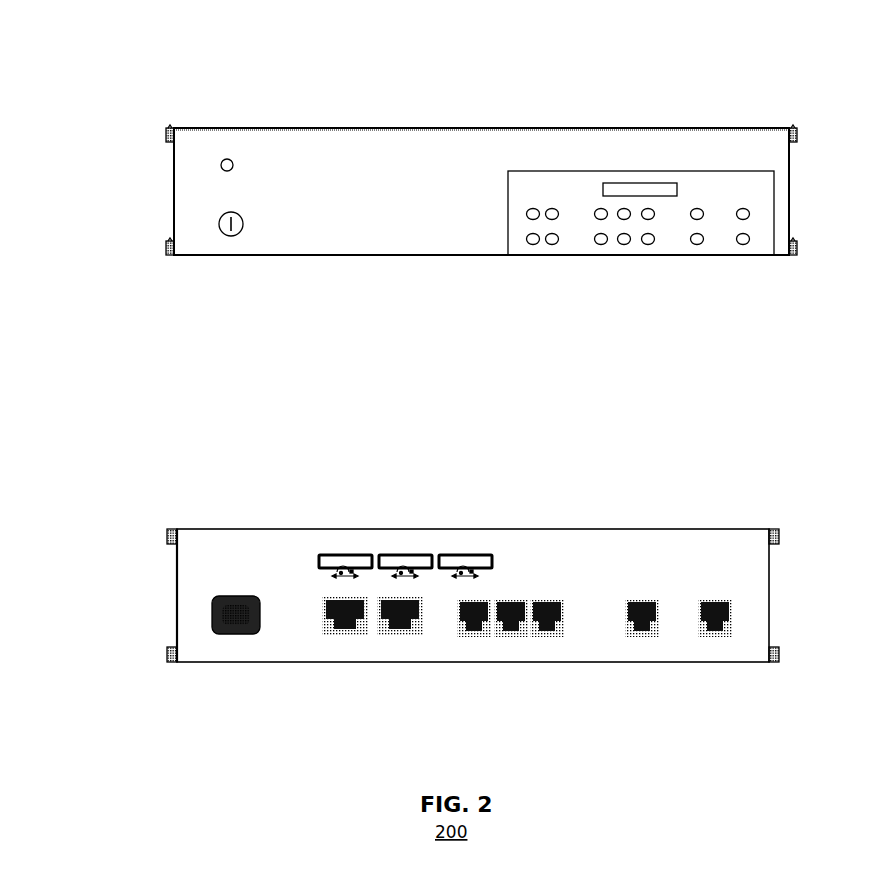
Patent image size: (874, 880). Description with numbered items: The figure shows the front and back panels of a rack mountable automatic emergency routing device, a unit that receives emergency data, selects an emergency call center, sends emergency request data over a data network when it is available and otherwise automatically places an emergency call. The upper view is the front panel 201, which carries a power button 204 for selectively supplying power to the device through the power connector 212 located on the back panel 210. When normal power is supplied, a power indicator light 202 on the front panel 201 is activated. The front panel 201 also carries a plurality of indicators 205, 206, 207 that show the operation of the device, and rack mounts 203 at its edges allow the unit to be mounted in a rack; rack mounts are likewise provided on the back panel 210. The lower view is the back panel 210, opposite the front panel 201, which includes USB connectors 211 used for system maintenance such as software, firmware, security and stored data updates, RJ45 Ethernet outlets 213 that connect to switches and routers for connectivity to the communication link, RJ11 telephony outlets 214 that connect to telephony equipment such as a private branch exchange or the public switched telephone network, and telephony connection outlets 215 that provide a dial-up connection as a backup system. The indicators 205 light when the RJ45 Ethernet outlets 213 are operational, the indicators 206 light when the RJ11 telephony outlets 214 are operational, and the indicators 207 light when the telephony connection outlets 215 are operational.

The front panel 201 is at (335, 150).
The power indicator light 202 is at (224, 158).
The rack mounts 203 is at (798, 133).
The power button 204 is at (232, 240).
The indicators 205 is at (525, 214).
The indicators 206 is at (593, 216).
The indicators 207 is at (688, 216).
The back panel 210 is at (226, 543).
The USB connectors 211 is at (355, 555).
The power connector 212 is at (212, 612).
The RJ45 Ethernet outlets 213 is at (348, 637).
The RJ11 telephony outlets 214 is at (472, 639).
The telephony connection outlets 215 is at (642, 639).